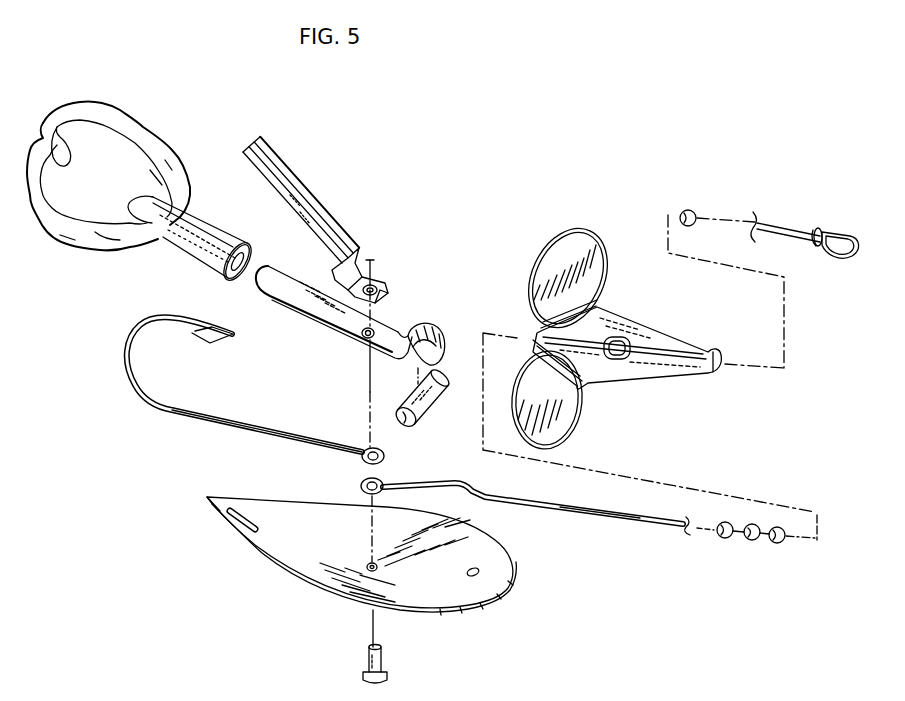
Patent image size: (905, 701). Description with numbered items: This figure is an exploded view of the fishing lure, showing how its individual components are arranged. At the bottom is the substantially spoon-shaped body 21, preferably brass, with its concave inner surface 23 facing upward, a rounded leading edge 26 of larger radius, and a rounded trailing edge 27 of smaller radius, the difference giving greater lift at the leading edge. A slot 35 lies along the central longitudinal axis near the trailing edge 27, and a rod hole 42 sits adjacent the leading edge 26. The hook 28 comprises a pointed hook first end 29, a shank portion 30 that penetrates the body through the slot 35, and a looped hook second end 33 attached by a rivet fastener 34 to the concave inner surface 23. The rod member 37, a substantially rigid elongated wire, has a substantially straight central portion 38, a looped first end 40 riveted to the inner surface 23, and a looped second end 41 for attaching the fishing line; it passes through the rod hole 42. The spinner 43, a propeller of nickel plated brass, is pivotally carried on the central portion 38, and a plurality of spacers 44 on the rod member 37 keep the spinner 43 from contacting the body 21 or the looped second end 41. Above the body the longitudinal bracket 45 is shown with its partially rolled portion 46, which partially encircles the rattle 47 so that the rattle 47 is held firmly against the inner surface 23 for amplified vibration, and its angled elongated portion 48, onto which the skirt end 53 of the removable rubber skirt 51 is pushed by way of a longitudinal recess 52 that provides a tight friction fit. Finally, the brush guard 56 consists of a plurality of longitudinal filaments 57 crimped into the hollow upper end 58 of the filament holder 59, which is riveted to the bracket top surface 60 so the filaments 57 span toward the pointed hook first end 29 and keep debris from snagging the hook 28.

The spoon-shaped body 21 is at (354, 555).
The concave inner surface 23 is at (296, 530).
The rounded leading edge 26 is at (513, 572).
The rounded trailing edge 27 is at (208, 498).
The hook 28 is at (203, 387).
The pointed hook first end 29 is at (201, 340).
The shank portion 30 is at (240, 427).
The looped hook second end 33 is at (363, 447).
The rivet fastener 34 is at (366, 661).
The slot 35 is at (236, 521).
The rod member 37 is at (548, 529).
The central portion 38 is at (565, 513).
The looped first end 40 is at (361, 487).
The looped second end 41 is at (847, 256).
The rod hole 42 is at (474, 578).
The spinner 43 is at (640, 392).
The spacers 44 is at (690, 210).
The longitudinal bracket 45 is at (357, 299).
The partially rolled portion 46 is at (440, 328).
The rattle 47 is at (430, 422).
The elongated portion 48 is at (284, 292).
The skirt 51 is at (152, 113).
The longitudinal recess 52 is at (192, 248).
The skirt end 53 is at (252, 243).
The brush guard 56 is at (312, 192).
The longitudinal filaments 57 is at (288, 163).
The hollow upper end 58 is at (348, 266).
The filament holder 59 is at (384, 269).
The bracket top surface 60 is at (336, 316).